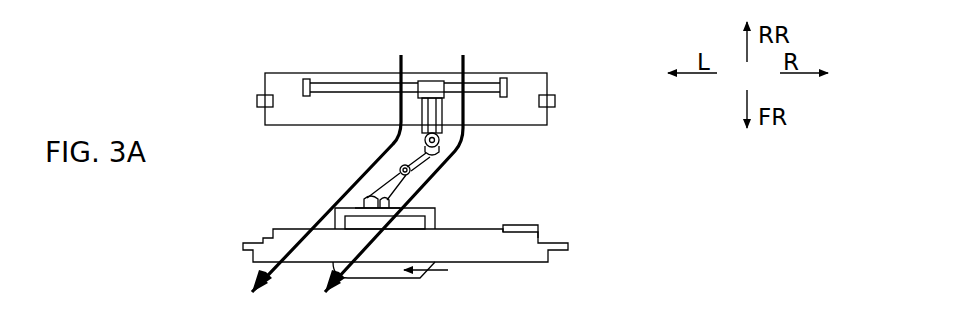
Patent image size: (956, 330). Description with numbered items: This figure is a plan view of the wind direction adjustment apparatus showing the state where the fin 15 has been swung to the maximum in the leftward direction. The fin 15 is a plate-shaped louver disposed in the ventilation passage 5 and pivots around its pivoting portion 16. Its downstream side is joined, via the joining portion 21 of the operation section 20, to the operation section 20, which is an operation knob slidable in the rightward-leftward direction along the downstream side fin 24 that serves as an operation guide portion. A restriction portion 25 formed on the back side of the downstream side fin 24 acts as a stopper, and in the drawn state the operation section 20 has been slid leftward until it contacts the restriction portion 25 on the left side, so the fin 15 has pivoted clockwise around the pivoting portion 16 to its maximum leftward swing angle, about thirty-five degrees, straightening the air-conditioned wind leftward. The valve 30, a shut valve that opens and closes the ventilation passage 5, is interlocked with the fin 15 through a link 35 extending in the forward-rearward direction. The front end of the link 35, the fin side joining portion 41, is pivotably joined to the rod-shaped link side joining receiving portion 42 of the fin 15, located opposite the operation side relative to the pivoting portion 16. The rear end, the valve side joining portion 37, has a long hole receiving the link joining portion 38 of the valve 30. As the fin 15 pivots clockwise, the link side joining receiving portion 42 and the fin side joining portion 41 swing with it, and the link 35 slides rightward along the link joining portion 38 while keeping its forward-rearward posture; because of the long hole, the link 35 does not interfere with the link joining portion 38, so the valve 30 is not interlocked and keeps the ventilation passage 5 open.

The ventilation passage 5 is at (542, 143).
The fin 15 is at (383, 188).
The pivoting portion 16 is at (399, 167).
The operation section 20 is at (383, 280).
The joining portion 21 is at (357, 203).
The downstream side fin 24 is at (480, 255).
The restriction portion 25 is at (335, 221).
The valve 30 is at (286, 82).
The link 35 is at (445, 112).
The valve side joining portion 37 is at (432, 80).
The link joining portion 38 is at (348, 81).
The fin side joining portion 41 is at (433, 154).
The link side joining receiving portion 42 is at (440, 138).